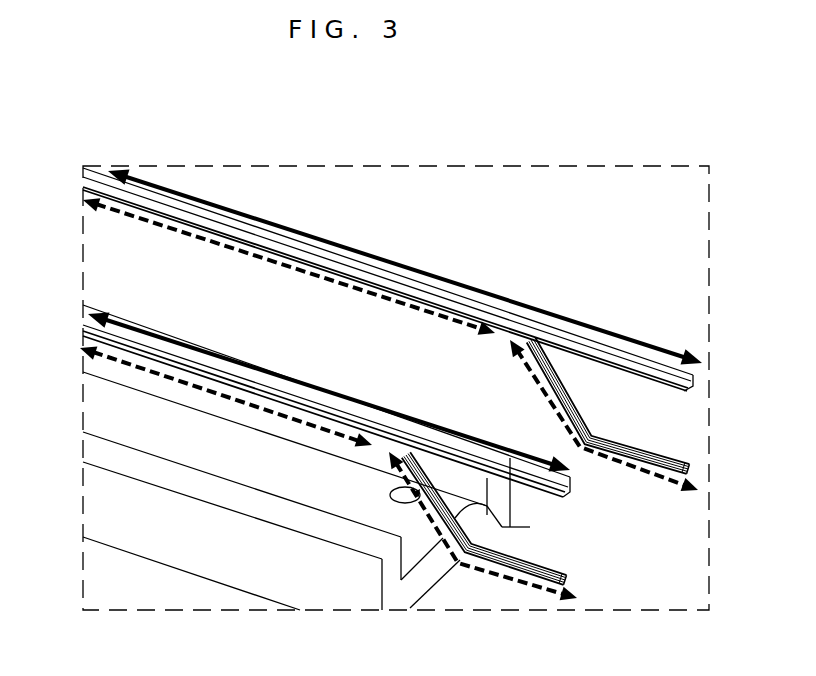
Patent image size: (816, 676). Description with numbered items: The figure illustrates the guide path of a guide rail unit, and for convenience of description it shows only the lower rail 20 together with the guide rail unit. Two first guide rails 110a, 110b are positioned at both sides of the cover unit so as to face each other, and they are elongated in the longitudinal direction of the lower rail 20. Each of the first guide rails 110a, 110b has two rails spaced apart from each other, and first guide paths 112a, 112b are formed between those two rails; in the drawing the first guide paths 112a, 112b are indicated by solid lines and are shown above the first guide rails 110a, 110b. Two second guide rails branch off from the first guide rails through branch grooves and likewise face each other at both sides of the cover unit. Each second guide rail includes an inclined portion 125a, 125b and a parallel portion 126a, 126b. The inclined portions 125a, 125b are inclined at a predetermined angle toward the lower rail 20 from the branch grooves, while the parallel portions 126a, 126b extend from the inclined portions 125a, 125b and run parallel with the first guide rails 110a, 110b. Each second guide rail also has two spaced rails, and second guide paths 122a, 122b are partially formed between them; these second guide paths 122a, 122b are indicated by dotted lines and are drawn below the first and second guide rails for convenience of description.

The lower rail 20 is at (204, 557).
The first guide rail 110a is at (103, 167).
The first guide rail 110b is at (90, 331).
The first guide path 112a is at (333, 237).
The first guide path 112b is at (130, 324).
The second guide path 122a is at (653, 482).
The second guide path 122b is at (480, 578).
The inclined portion 125a is at (576, 397).
The inclined portion 125b is at (490, 520).
The parallel portion 126a is at (660, 457).
The parallel portion 126b is at (546, 565).